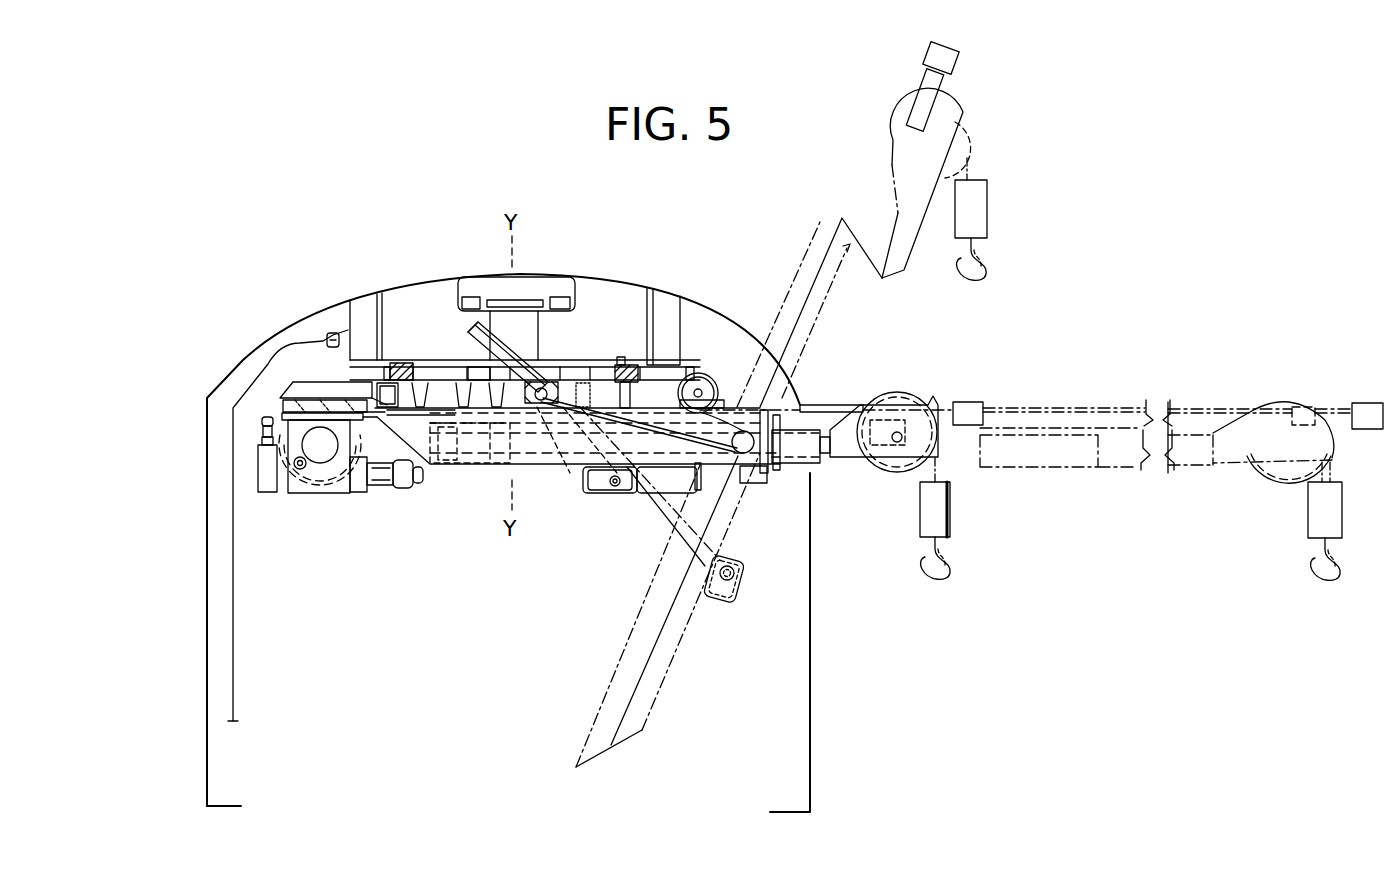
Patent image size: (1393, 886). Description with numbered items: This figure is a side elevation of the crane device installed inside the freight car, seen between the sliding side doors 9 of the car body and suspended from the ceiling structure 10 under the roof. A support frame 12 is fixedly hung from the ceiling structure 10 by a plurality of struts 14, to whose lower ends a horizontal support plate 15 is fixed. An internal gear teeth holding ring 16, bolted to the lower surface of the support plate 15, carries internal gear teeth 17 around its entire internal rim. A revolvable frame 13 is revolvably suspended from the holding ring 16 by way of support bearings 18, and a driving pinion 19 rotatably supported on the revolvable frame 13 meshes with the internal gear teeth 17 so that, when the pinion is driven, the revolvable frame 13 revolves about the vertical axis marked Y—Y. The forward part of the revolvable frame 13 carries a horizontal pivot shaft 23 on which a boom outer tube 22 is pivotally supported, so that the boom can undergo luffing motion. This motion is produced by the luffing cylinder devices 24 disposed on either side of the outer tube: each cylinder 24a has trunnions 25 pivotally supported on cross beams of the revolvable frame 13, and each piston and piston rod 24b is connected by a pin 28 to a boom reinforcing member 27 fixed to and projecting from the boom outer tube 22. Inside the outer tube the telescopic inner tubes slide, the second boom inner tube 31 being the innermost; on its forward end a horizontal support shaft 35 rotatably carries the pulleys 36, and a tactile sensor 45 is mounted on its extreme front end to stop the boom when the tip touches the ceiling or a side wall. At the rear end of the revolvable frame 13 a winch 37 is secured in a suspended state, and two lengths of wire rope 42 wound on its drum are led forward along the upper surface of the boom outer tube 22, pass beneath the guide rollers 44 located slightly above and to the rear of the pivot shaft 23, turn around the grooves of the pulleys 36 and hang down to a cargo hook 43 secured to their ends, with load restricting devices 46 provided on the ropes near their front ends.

The side doors 9 is at (235, 589).
The ceiling structure 10 is at (396, 289).
The support frame 12 is at (614, 355).
The revolvable frame 13 is at (292, 382).
The struts 14 is at (365, 296).
The horizontal support plate 15 is at (390, 362).
The internal gear teeth holding ring 16 is at (404, 379).
The internal gear teeth 17 is at (432, 368).
The support bearings 18 is at (390, 371).
The driving pinion 19 is at (478, 366).
The boom outer tube 22 is at (656, 466).
The horizontal pivot shaft 23 is at (746, 452).
The luffing cylinder devices 24 is at (513, 341).
The cylinder 24a is at (480, 327).
The piston and piston rod 24b is at (610, 480).
The trunnions 25 is at (546, 386).
The boom reinforcing member 27 is at (583, 479).
The pin 28 is at (613, 488).
The second boom inner tube 31 is at (826, 458).
The horizontal support shaft 35 is at (895, 431).
The pulleys 36 is at (360, 494).
The winch 37 is at (272, 405).
The wire rope 42 is at (369, 421).
The cargo hook 43 is at (939, 574).
The guide rollers 44 is at (703, 378).
The tactile sensor 45 is at (969, 402).
The load restricting devices 46 is at (834, 404).